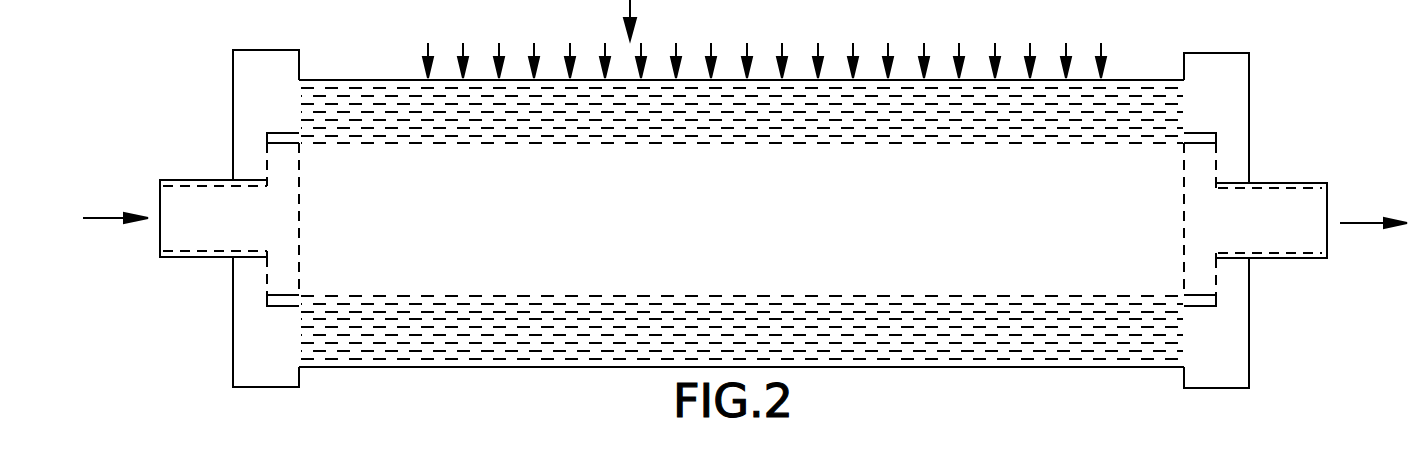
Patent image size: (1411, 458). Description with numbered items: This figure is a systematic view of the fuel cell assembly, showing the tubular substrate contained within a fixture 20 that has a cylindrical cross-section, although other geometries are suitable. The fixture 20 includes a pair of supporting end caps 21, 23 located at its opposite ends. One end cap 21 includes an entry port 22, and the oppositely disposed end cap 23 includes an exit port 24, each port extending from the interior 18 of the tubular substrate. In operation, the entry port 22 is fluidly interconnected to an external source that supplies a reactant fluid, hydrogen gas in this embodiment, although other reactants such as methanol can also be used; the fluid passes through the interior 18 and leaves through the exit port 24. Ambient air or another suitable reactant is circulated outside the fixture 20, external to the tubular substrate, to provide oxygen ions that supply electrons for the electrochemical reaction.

The interior 18 is at (860, 272).
The fixture 20 is at (428, 378).
The end cap 21 is at (242, 64).
The entry port 22 is at (178, 243).
The end cap 23 is at (1238, 65).
The exit port 24 is at (1305, 244).